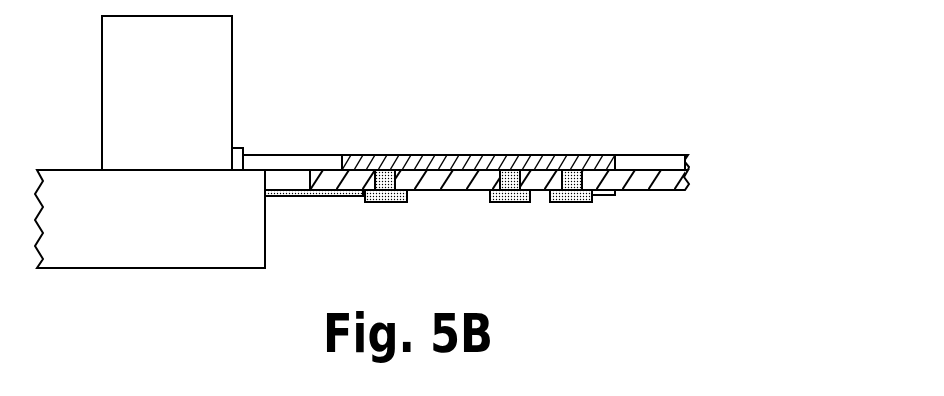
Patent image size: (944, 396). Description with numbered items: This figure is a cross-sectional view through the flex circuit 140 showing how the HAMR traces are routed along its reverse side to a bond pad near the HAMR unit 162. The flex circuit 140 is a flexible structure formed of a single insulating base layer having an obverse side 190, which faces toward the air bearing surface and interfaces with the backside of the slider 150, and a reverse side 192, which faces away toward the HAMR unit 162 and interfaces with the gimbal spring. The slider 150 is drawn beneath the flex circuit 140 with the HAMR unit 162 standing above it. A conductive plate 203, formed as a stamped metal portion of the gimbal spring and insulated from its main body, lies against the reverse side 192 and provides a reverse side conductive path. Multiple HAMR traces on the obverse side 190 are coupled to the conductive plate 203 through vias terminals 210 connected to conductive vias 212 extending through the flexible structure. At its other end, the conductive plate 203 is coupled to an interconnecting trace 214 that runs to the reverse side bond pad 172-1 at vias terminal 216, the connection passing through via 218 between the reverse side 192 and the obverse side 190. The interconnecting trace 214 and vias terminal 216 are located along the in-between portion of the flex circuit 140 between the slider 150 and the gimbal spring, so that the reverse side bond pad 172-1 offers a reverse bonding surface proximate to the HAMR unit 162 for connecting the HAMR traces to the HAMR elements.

The HAMR unit 162 is at (147, 104).
The slider 150 is at (144, 236).
The reverse side bond pad 172-1 is at (293, 193).
The via 218 is at (387, 185).
The conductive via 212 is at (512, 182).
The conductive plate 203 is at (576, 155).
The reverse side 192 is at (670, 162).
The flex circuit 140 is at (664, 180).
The obverse side 190 is at (642, 192).
The interconnecting trace 214 is at (312, 200).
The vias terminal 216 is at (387, 202).
The vias terminal 210 is at (510, 202).